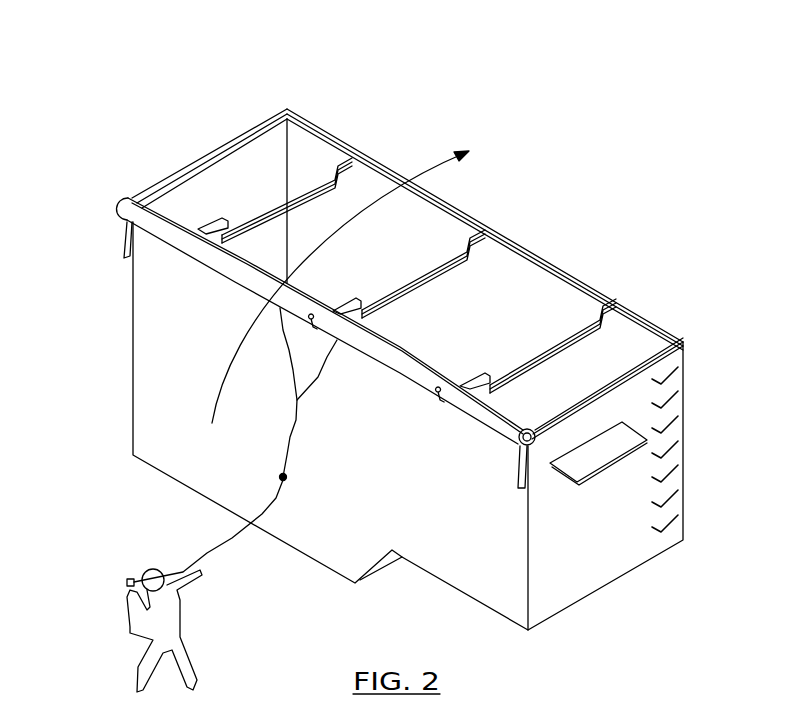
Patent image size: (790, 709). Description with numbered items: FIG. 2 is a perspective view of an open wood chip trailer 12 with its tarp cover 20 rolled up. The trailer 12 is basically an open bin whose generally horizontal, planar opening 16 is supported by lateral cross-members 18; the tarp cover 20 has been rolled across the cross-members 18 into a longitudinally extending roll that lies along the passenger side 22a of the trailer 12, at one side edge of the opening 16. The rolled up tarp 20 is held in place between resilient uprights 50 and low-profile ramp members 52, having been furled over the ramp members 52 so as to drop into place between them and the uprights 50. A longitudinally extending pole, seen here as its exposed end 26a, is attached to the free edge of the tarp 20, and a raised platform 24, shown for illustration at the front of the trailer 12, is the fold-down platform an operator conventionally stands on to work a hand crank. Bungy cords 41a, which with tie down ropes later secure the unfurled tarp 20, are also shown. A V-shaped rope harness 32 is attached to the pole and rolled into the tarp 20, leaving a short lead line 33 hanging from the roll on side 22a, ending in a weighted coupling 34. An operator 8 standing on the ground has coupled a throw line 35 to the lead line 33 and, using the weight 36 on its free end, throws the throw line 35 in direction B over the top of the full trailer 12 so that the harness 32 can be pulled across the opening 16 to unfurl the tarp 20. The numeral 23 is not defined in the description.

The operator 8 is at (155, 636).
The trailer 12 is at (605, 208).
The opening 16 is at (376, 157).
The cross-members 18 is at (316, 185).
The tarp cover 20 is at (127, 200).
The passenger side 22a is at (480, 492).
The rear rail of frame 23 is at (520, 232).
The raised platform 24 is at (567, 480).
The exposed end of pole 26a is at (538, 441).
The rope harness 32 is at (320, 375).
The lead line extension 33 is at (290, 433).
The weighted coupling 34 is at (287, 477).
The throw line 35 is at (209, 552).
The weight 36 is at (127, 582).
The bungy cords 41a is at (122, 240).
The uprights 50 is at (176, 247).
The ramp members 52 is at (217, 220).
The direction B is at (353, 281).